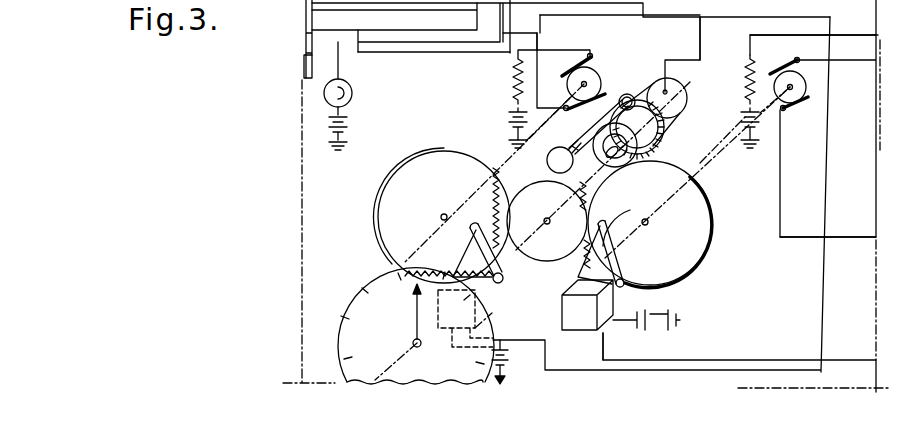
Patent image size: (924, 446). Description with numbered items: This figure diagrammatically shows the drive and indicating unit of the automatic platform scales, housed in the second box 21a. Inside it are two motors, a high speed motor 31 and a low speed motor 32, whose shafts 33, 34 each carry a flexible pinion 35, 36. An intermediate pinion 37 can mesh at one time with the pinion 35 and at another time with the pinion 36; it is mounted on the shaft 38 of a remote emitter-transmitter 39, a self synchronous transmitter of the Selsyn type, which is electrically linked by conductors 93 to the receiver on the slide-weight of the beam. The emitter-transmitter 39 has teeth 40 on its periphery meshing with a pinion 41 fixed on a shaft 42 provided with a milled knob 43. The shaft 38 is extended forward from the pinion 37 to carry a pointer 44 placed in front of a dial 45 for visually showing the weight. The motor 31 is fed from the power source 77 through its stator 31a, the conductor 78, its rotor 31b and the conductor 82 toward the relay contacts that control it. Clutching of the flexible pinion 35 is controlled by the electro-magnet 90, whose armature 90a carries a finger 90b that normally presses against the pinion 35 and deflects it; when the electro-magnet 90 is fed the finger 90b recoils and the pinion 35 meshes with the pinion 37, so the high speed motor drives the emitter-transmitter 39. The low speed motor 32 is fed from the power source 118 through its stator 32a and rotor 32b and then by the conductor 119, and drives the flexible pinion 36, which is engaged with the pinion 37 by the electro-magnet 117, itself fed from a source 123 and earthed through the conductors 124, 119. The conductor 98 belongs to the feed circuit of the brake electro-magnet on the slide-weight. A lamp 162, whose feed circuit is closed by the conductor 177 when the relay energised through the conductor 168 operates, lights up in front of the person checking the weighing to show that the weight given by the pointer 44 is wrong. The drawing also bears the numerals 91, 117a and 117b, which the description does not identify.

The conductor 168 is at (458, 8).
The conductor 177 is at (523, 33).
The conductor 119 is at (587, 16).
The conductors 93 is at (409, 54).
The conductors 124 is at (758, 24).
The conductor 78 is at (813, 34).
The lamp 162 is at (352, 94).
The conductor 98 is at (303, 66).
The stator 32a is at (510, 82).
The power source 118 is at (502, 116).
The shaft 34 is at (504, 150).
The low speed motor 32 is at (580, 62).
The rotor 32b is at (600, 68).
The flexible pinion 36 is at (456, 150).
The intermediate pinion 37 is at (534, 188).
The flexible pinion 35 is at (708, 204).
The shaft 38 is at (582, 187).
The milled knob 43 is at (561, 134).
The shaft 42 is at (604, 112).
The pinion 41 is at (627, 94).
The teeth 40 is at (654, 88).
The remote emitter-transmitter 39 is at (670, 117).
The stator 31a is at (746, 82).
The power source 77 is at (741, 118).
The high speed motor 31 is at (812, 88).
The rotor 31b is at (792, 64).
The second box 21a is at (880, 150).
The shaft 33 is at (713, 164).
The conductor 82 is at (780, 178).
The pawl arm 117b is at (484, 216).
The pawl 117a is at (468, 239).
The electro-magnet 117 is at (494, 298).
The dial 45 is at (364, 288).
The pointer 44 is at (412, 314).
The source 123 is at (502, 374).
The finger 90b is at (612, 218).
The armature 90a is at (632, 220).
The electro-magnet 90 is at (612, 306).
The battery 91 is at (646, 338).